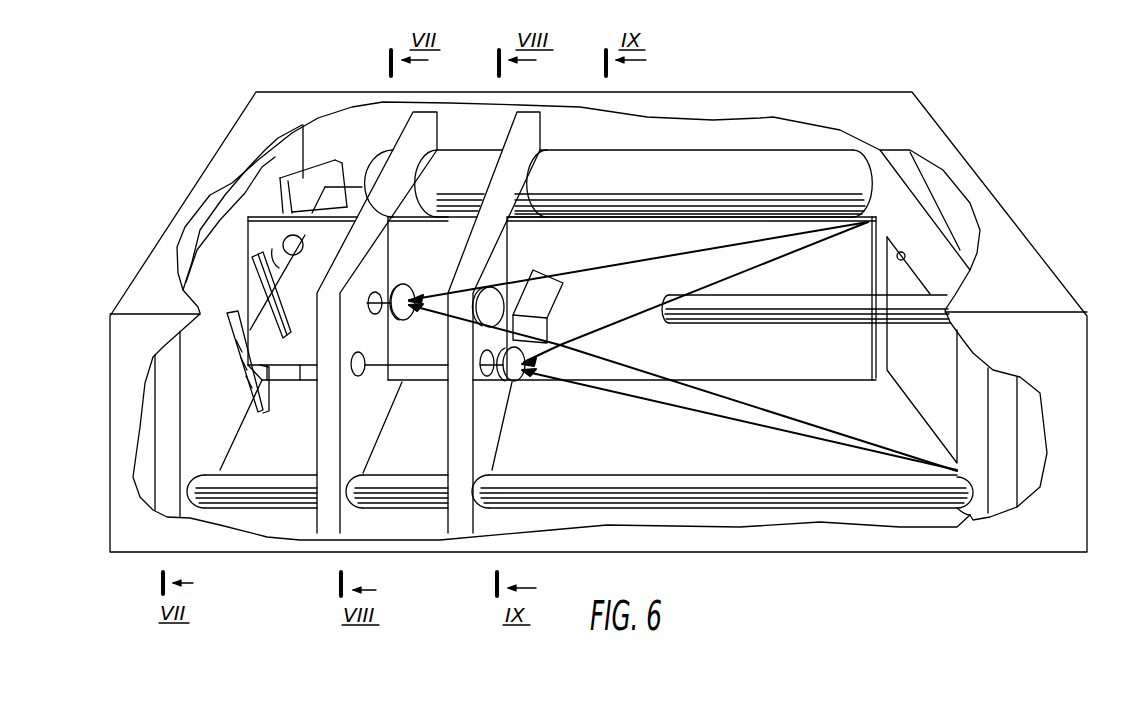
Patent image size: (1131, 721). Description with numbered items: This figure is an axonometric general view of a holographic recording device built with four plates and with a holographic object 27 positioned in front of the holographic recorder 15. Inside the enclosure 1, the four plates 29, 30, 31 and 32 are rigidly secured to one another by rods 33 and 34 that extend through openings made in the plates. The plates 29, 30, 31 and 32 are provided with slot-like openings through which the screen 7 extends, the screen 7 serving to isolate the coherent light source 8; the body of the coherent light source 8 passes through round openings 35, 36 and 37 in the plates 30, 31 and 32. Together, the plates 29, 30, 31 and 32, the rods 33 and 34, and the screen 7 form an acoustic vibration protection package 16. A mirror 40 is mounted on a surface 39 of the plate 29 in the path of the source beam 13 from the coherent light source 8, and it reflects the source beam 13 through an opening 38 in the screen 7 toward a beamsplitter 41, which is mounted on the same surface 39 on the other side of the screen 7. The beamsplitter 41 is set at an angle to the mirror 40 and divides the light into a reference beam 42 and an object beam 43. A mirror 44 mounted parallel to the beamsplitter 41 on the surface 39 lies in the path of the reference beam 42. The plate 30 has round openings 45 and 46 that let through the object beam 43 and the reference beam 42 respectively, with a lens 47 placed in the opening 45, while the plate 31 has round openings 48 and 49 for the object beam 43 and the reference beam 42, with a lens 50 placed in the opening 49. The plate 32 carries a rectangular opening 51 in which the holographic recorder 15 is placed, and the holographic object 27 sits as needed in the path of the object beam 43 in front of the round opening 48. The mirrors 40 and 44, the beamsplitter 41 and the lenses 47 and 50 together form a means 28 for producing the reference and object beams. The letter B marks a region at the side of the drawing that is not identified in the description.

The enclosure 1 is at (248, 113).
The screen 7 is at (833, 372).
The coherent light source 8 is at (603, 163).
The source beam 13 is at (268, 247).
The holographic recorder 15 is at (940, 405).
The acoustic vibration protection package 16 is at (422, 520).
The holographic object 27 is at (553, 277).
The means for producing reference and object beams 28 is at (293, 381).
The plate 29 is at (305, 147).
The plate 30 is at (427, 121).
The plate 31 is at (536, 117).
The plate 32 is at (917, 175).
The rod 33 is at (921, 300).
The rod 34 is at (973, 513).
The round opening 35 is at (420, 188).
The round opening 36 is at (528, 193).
The round opening 37 is at (868, 177).
The opening 38 is at (303, 244).
The surface 39 is at (275, 163).
The mirror 40 is at (340, 172).
The beamsplitter 41 is at (253, 275).
The reference beam 42 is at (250, 300).
The object beam 43 is at (440, 296).
The mirror 44 is at (235, 360).
The round opening 45 is at (375, 292).
The round opening 46 is at (360, 377).
The lens 47 is at (403, 284).
The round opening 48 is at (480, 290).
The round opening 49 is at (487, 377).
The lens 50 is at (516, 382).
The rectangular opening 51 is at (908, 249).
The bottle B is at (1030, 432).